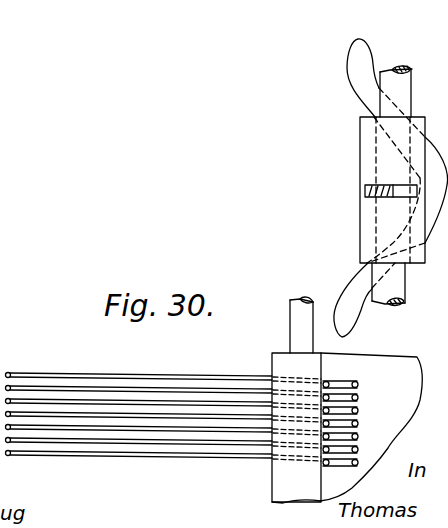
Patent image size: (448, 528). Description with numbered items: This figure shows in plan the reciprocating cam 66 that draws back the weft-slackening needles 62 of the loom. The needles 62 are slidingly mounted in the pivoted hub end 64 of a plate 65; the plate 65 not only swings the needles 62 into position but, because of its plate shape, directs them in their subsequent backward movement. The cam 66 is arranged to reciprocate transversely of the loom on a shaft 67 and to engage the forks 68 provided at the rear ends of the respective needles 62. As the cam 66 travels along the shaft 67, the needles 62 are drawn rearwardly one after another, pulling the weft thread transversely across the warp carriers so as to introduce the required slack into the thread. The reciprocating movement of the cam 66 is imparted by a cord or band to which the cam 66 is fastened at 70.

The needles 62 is at (146, 373).
The pivoted hub end 64 is at (297, 299).
The plate 65 is at (371, 427).
The cam 66 is at (348, 63).
The shaft 67 is at (398, 283).
The forks 68 is at (348, 379).
The fastening point of cam to cord 70 is at (390, 199).